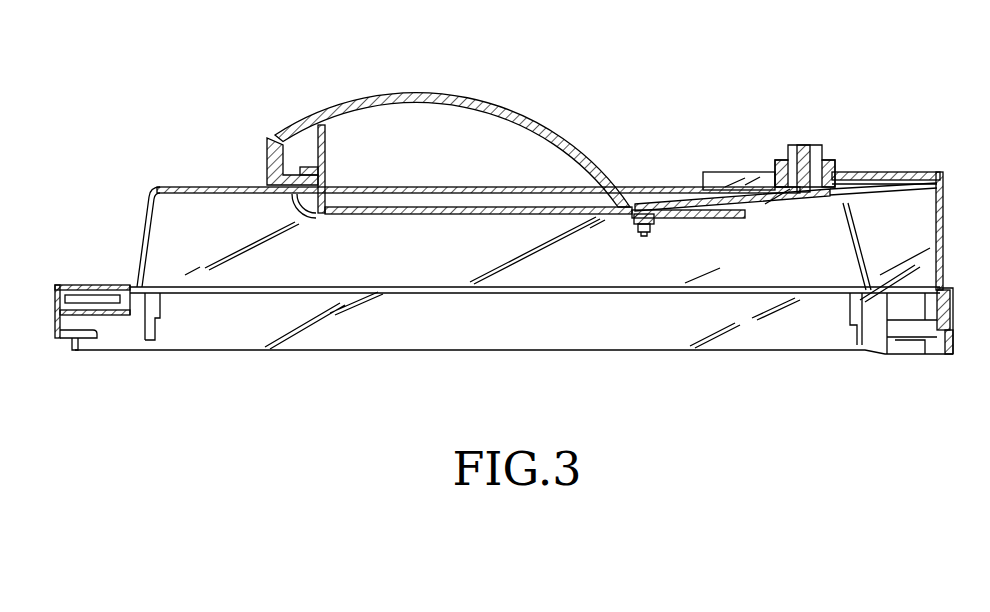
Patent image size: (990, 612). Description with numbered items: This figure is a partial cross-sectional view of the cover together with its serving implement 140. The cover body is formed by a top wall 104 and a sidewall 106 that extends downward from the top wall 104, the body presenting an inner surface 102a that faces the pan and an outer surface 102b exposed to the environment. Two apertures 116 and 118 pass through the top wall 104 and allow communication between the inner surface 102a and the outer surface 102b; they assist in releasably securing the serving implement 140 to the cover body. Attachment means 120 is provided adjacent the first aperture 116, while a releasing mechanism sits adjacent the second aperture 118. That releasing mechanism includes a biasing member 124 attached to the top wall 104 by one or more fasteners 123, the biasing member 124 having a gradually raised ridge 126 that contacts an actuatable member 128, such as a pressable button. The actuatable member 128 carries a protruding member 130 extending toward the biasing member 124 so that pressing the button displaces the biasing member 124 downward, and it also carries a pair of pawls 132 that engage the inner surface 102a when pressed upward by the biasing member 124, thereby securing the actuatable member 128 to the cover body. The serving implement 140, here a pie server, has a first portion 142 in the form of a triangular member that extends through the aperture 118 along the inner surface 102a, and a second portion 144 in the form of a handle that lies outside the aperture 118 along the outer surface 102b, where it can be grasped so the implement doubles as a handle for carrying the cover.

The inner surface 102a is at (435, 215).
The outer surface 102b is at (402, 207).
The top wall 104 is at (200, 186).
The sidewall 106 is at (148, 226).
The aperture 116 is at (307, 207).
The aperture 118 is at (706, 183).
The attachment means 120 is at (317, 126).
The fastener 123 is at (648, 237).
The biasing member 124 is at (745, 220).
The gradually raised ridge 126 is at (812, 208).
The actuatable member 128 is at (790, 146).
The protruding member 130 is at (806, 171).
The pawls 132 is at (765, 182).
The serving implement 140 is at (505, 98).
The first portion 142 is at (866, 198).
The second portion 144 is at (387, 97).